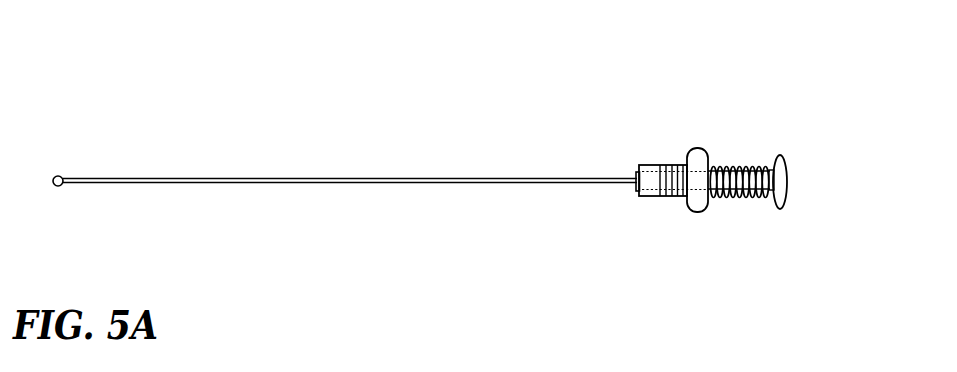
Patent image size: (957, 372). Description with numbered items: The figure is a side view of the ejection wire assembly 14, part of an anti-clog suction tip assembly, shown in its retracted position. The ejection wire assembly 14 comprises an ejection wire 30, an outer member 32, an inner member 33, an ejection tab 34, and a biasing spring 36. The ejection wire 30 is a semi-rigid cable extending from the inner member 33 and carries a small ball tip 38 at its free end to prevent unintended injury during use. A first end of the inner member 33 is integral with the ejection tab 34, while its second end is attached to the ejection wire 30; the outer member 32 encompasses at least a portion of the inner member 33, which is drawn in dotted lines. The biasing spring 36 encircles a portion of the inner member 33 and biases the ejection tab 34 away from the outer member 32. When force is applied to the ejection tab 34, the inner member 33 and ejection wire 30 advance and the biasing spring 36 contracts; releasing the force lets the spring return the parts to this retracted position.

The ejection wire assembly 14 is at (68, 51).
The ejection wire 30 is at (240, 182).
The outer member 32 is at (687, 165).
The inner member 33 is at (636, 190).
The ejection tab 34 is at (778, 157).
The biasing spring 36 is at (733, 163).
The ball tip 38 is at (60, 175).